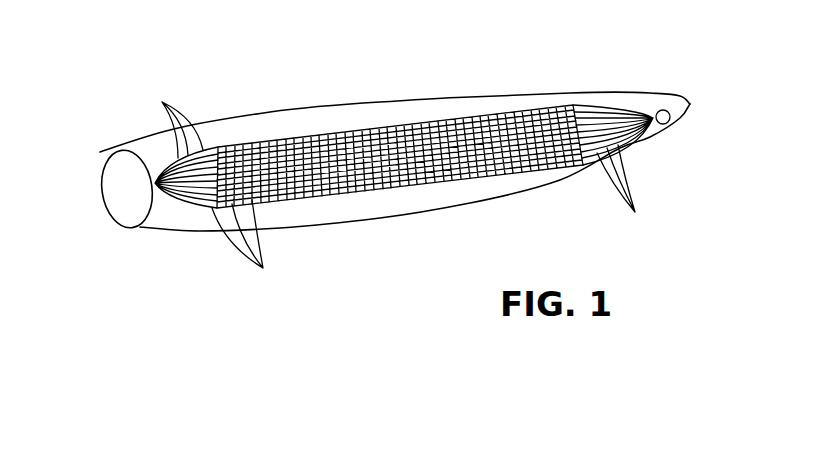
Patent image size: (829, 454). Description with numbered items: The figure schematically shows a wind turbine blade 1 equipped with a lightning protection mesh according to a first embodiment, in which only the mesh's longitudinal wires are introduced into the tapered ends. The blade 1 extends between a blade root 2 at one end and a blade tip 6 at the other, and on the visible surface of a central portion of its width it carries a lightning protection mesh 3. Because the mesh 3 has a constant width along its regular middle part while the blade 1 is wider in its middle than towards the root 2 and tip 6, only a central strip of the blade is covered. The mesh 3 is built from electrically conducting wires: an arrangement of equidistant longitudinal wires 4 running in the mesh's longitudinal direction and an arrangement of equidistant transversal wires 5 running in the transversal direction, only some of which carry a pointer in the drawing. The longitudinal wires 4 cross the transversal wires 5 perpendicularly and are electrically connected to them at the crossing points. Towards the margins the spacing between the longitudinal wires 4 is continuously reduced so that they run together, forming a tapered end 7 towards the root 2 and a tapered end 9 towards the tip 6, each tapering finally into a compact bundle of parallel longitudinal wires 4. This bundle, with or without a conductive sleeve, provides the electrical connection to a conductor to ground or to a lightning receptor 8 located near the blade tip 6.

The wind turbine blade 1 is at (491, 73).
The blade root 2 is at (118, 148).
The lightning protection mesh 3 is at (288, 134).
The longitudinal wires 4 is at (397, 160).
The transversal wires 5 is at (239, 248).
The blade tip 6 is at (690, 102).
The tapered end 7 is at (172, 212).
The lightning receptor 8 is at (663, 110).
The tapered end 9 is at (652, 130).